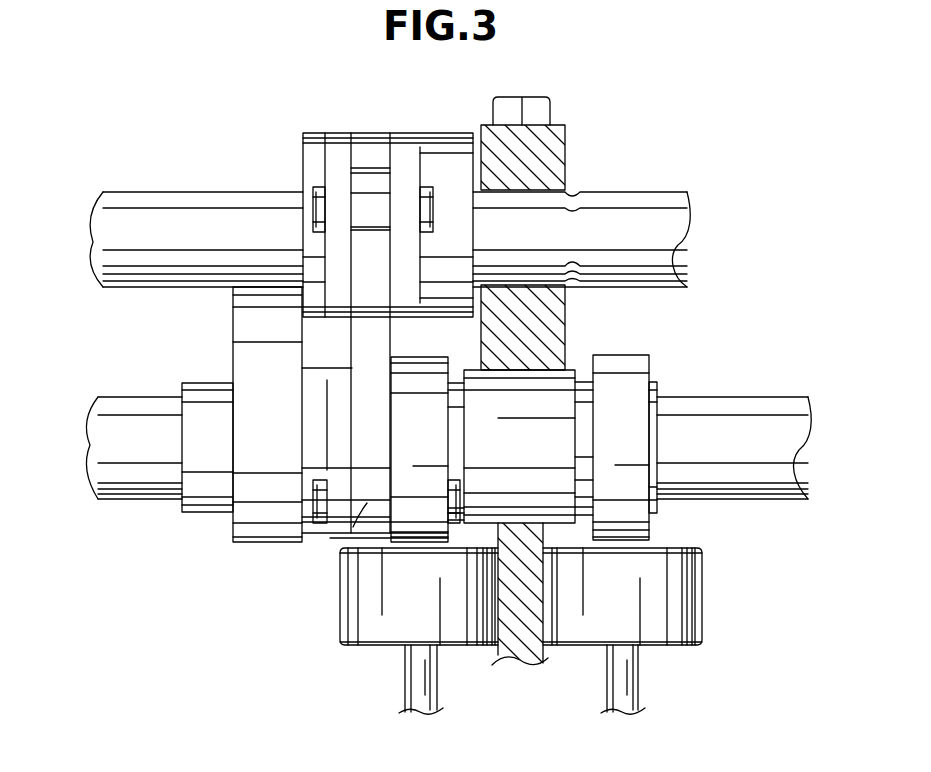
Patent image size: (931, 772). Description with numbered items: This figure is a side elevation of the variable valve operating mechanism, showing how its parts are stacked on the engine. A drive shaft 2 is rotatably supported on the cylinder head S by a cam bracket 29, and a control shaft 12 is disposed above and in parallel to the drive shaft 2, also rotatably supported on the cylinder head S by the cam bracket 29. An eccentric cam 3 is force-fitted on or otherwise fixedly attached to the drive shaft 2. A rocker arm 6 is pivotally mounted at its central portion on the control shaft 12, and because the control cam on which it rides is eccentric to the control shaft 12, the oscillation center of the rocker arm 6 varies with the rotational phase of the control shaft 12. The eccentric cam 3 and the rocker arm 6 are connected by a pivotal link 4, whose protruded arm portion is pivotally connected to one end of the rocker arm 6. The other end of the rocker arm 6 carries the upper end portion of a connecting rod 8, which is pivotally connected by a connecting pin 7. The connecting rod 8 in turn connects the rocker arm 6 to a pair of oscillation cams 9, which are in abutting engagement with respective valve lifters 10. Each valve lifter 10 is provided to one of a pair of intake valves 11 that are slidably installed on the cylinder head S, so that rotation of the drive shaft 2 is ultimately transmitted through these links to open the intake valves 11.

The drive shaft 2 is at (743, 472).
The eccentric cam 3 is at (207, 483).
The pivotal link 4 is at (258, 518).
The rocker arm 6 is at (450, 153).
The connecting pin 7 is at (311, 215).
The connecting rod 8 is at (335, 534).
The oscillation cam 9 is at (625, 377).
The valve lifter 10 is at (368, 628).
The intake valve 11 is at (417, 682).
The control shaft 12 is at (653, 217).
The cam bracket 29 is at (530, 160).
The cylinder head S is at (521, 640).